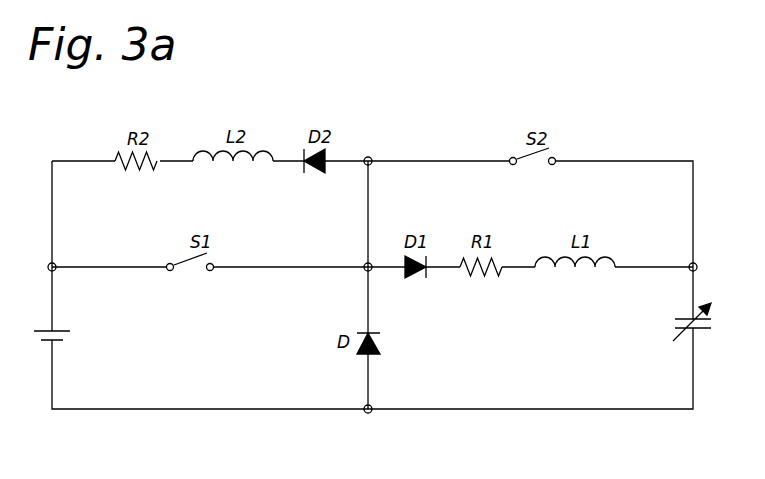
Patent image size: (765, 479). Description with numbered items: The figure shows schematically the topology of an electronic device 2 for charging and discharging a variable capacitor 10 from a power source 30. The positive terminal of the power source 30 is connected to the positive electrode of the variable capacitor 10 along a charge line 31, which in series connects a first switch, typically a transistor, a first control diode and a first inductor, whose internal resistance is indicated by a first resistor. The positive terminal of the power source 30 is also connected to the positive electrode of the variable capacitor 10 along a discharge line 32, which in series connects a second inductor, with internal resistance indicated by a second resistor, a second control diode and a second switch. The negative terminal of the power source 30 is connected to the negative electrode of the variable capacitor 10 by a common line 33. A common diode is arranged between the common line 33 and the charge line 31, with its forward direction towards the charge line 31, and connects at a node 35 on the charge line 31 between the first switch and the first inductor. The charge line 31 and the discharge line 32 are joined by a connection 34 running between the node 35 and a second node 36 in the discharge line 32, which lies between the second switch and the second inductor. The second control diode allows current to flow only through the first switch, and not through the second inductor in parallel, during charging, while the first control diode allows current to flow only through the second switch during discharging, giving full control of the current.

The electronic device 2 is at (466, 108).
The variable capacitor 10 is at (698, 329).
The power source 30 is at (46, 339).
The charge line 31 is at (290, 268).
The discharge line 32 is at (446, 161).
The common line 33 is at (425, 410).
The connection 34 is at (369, 195).
The node 35 is at (369, 310).
The second node 36 is at (372, 159).